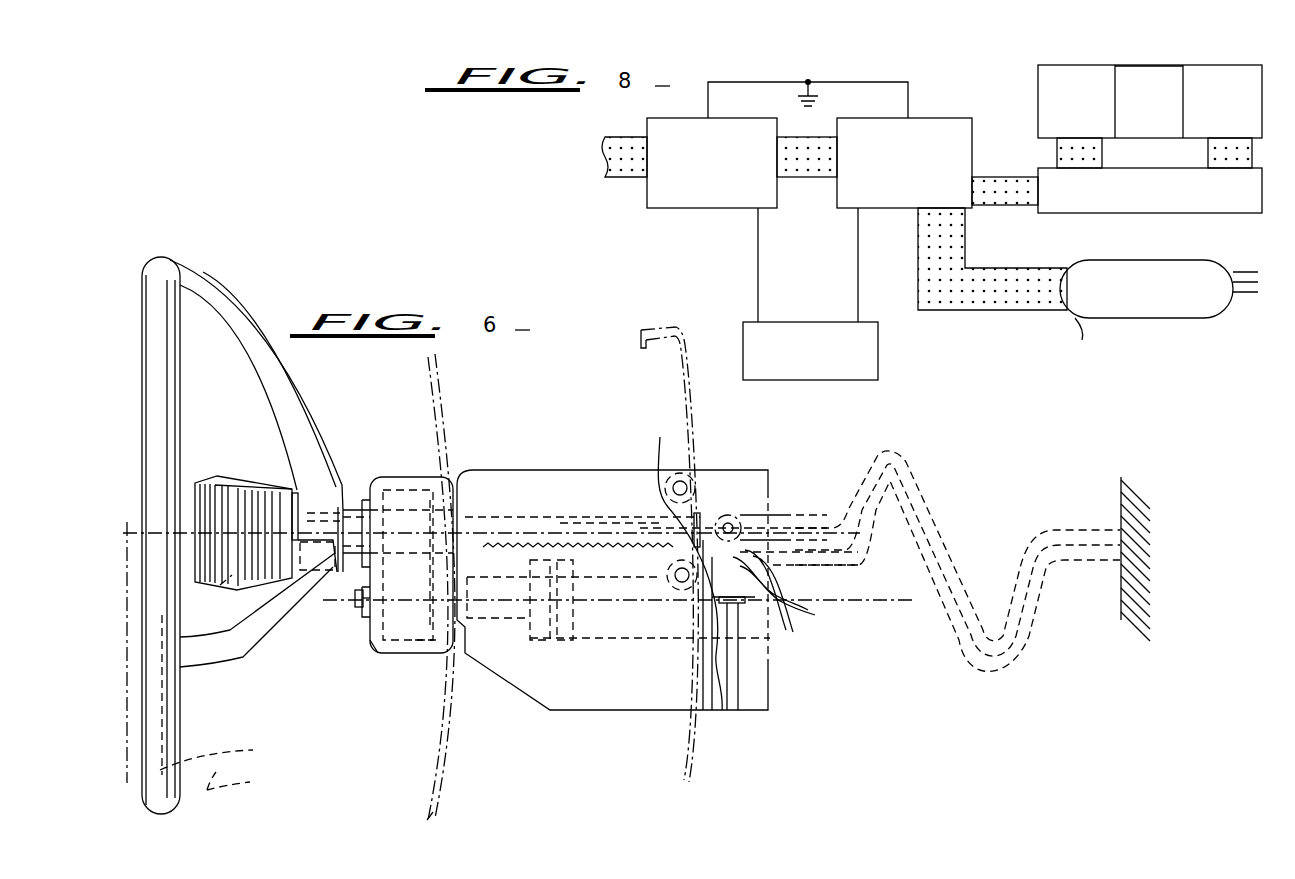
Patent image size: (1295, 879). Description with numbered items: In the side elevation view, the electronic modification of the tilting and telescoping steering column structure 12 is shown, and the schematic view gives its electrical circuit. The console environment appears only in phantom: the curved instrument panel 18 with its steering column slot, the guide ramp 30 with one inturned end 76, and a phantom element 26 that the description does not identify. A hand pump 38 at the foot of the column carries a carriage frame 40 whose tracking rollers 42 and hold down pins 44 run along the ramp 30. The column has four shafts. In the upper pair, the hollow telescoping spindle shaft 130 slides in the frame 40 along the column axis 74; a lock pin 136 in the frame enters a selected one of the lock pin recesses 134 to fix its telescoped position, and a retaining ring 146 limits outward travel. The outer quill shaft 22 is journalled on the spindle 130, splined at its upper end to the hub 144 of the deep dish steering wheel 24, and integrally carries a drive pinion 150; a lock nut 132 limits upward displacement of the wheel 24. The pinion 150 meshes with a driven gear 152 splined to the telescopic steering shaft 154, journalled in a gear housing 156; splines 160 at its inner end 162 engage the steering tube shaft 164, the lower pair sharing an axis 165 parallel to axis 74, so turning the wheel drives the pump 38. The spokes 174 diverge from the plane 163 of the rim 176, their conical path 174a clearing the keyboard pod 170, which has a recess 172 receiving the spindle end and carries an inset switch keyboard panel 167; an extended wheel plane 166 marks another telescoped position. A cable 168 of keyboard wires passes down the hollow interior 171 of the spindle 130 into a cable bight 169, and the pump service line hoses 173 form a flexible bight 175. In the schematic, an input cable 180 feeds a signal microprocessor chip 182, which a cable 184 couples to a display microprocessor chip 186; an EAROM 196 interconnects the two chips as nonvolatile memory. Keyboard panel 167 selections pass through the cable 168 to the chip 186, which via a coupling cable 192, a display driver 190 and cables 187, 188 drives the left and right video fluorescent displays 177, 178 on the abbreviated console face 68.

In FIG. 6, the steering column structure 12 is at (356, 466).
In FIG. 8, the curved instrument panel 18 is at (1156, 64).
In FIG. 6, the curved instrument panel 18 is at (422, 813).
In FIG. 6, the quill shaft 22 is at (352, 510).
In FIG. 6, the steering wheel 24 is at (243, 328).
In FIG. 6, the steering column housing 26 is at (432, 782).
In FIG. 6, the guide ramp 30 is at (691, 344).
In FIG. 6, the hand pump 38 is at (740, 588).
In FIG. 6, the carriage frame 40 is at (695, 562).
In FIG. 6, the tracking rollers 42 is at (748, 487).
In FIG. 6, the hold down pins 44 is at (748, 512).
In FIG. 8, the console face 68 is at (1135, 78).
In FIG. 6, the column axis 74 is at (123, 533).
In FIG. 6, the inturned ramp end 76 is at (643, 328).
In FIG. 6, the spindle shaft 130 is at (690, 478).
In FIG. 6, the lock nut 132 is at (297, 497).
In FIG. 6, the lock pin recesses 134 is at (567, 550).
In FIG. 6, the lock pin 136 is at (480, 540).
In FIG. 6, the steering wheel hub 144 is at (180, 803).
In FIG. 6, the retaining ring 146 is at (705, 514).
In FIG. 6, the drive pinion 150 is at (387, 493).
In FIG. 6, the driven gear 152 is at (430, 654).
In FIG. 6, the telescopic steering shaft 154 is at (367, 613).
In FIG. 6, the gear housing 156 is at (372, 654).
In FIG. 6, the splines 160 is at (408, 565).
In FIG. 6, the telescopic steering shaft inner end 162 is at (540, 647).
In FIG. 6, the wheel rim plane 163 is at (226, 755).
In FIG. 6, the steering tube shaft 164 is at (483, 653).
In FIG. 6, the lower shaft axis 165 is at (352, 600).
In FIG. 6, the extended wheel plane 166 is at (127, 663).
In FIG. 8, the switch keyboard panel 167 is at (1090, 319).
In FIG. 6, the switch keyboard panel 167 is at (197, 548).
In FIG. 8, the cable 168 is at (990, 311).
In FIG. 6, the cable 168 is at (557, 517).
In FIG. 6, the cable bight 169 is at (927, 493).
In FIG. 8, the keyboard pod 170 is at (1188, 319).
In FIG. 6, the keyboard pod 170 is at (267, 487).
In FIG. 6, the hollow interior 171 is at (622, 517).
In FIG. 6, the pod recess 172 is at (220, 585).
In FIG. 6, the pump service line hoses 173 is at (794, 591).
In FIG. 6, the spokes 174 is at (220, 643).
In FIG. 6, the conical path of spokes 174a is at (256, 783).
In FIG. 6, the flexible hose bight 175 is at (905, 530).
In FIG. 6, the steering wheel rim 176 is at (168, 708).
In FIG. 8, the left video fluorescent display 177 is at (1038, 93).
In FIG. 8, the right video fluorescent display 178 is at (1265, 90).
In FIG. 8, the input cable 180 is at (612, 136).
In FIG. 8, the signal microprocessor chip 182 is at (705, 209).
In FIG. 8, the electrical cable 184 is at (803, 178).
In FIG. 8, the display microprocessor chip 186 is at (880, 209).
In FIG. 8, the cable 187 is at (1057, 150).
In FIG. 8, the cable 188 is at (1208, 152).
In FIG. 8, the display driver 190 is at (1178, 214).
In FIG. 8, the coupling cable 192 is at (995, 206).
In FIG. 8, the EAROM 196 is at (866, 381).